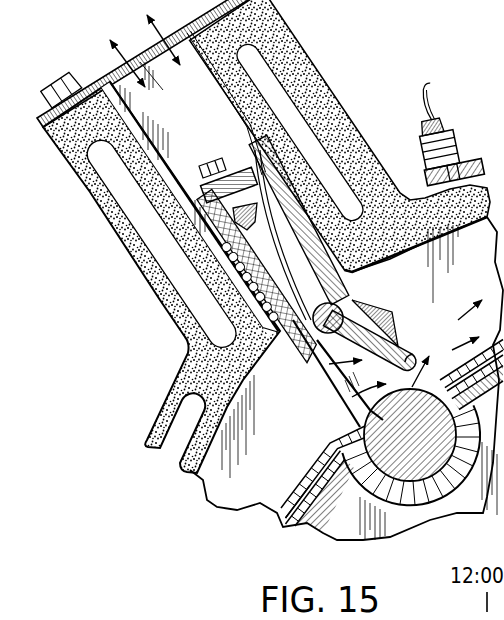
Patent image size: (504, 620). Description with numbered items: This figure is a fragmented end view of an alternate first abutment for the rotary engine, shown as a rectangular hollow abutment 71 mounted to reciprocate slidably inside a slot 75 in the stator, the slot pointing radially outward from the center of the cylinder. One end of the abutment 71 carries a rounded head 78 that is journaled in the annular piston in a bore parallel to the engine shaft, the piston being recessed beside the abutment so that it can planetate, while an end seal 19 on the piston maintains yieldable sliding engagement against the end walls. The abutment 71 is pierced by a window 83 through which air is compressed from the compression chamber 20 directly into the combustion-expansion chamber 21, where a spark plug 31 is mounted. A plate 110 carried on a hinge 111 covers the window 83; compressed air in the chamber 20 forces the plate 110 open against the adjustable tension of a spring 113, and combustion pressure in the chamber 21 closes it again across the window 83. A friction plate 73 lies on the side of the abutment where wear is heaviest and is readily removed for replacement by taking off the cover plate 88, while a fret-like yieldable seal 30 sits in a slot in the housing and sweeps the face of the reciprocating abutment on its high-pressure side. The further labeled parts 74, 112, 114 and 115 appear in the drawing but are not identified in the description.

The end seal 19 is at (283, 500).
The compression chamber 20 is at (385, 437).
The combustion-expansion chamber 21 is at (475, 296).
The fret-like yieldable seal 30 is at (342, 248).
The spark plug 31 is at (444, 128).
The rectangular hollow abutment 71 is at (298, 340).
The friction plate 73 is at (157, 148).
The housing side wall 74 is at (215, 285).
The slot 75 is at (217, 83).
The rounded head 78 is at (412, 447).
The window 83 is at (335, 372).
The cover plate 88 is at (107, 77).
The plate 110 is at (409, 347).
The hinge 111 is at (358, 300).
The pivot pin 112 is at (338, 300).
The spring 113 is at (296, 293).
The adjusting screw head 114 is at (200, 165).
The channel inner wall 115 is at (252, 124).